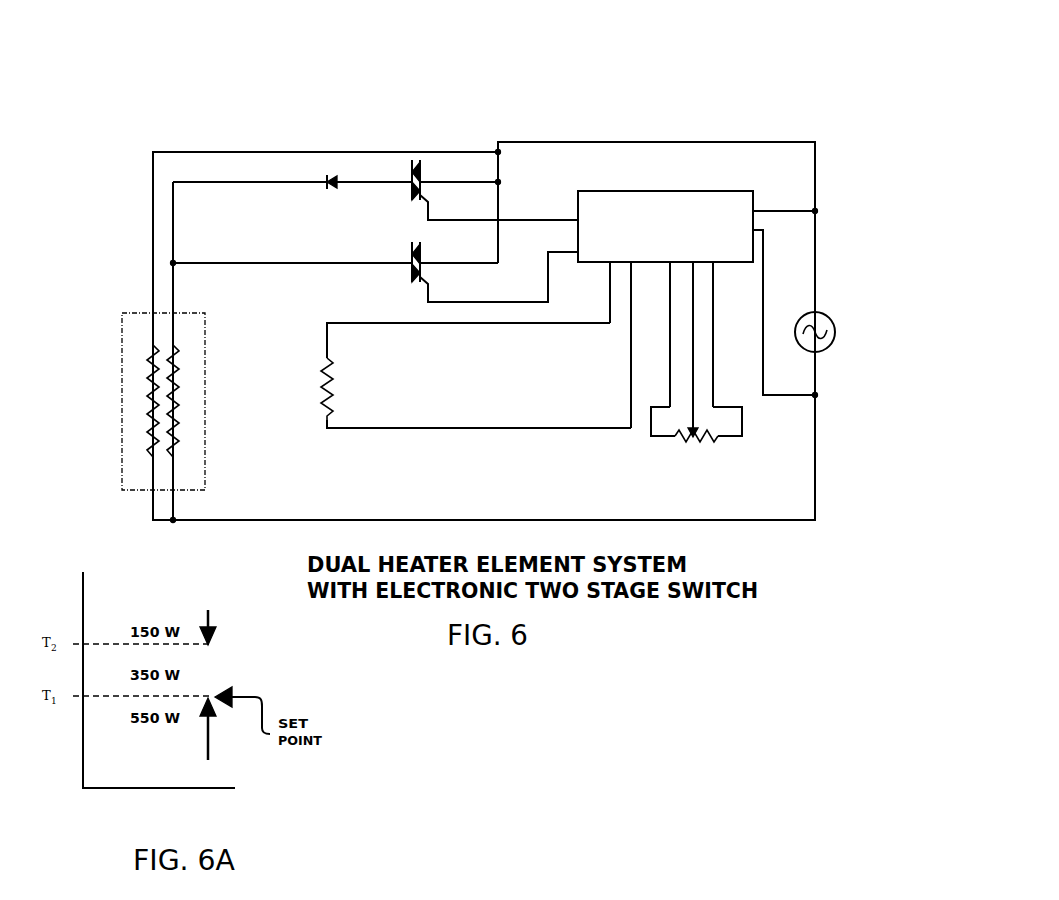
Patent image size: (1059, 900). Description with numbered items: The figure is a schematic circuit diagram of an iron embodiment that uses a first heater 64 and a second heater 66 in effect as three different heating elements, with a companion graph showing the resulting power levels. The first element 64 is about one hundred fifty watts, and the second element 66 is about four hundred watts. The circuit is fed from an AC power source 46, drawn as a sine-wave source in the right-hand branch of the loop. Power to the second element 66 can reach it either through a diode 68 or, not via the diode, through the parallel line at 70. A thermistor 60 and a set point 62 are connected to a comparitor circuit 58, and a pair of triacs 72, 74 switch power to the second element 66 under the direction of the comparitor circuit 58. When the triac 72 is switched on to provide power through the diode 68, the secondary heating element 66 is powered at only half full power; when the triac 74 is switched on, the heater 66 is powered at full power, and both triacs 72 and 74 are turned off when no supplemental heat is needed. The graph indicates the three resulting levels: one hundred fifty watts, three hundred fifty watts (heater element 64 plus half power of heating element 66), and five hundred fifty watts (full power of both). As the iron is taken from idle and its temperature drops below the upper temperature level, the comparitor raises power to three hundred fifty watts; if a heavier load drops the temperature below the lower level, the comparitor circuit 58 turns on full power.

The 115 VAC power source 46 is at (827, 316).
The comparitor circuit 58 is at (660, 200).
The thermistor 60 is at (320, 391).
The set point 62 is at (725, 441).
The first heater 64 is at (138, 373).
The second heater 66 is at (180, 373).
The diode 68 is at (345, 176).
The parallel line 70 is at (290, 266).
The triac 72 is at (425, 176).
The triac 74 is at (425, 272).